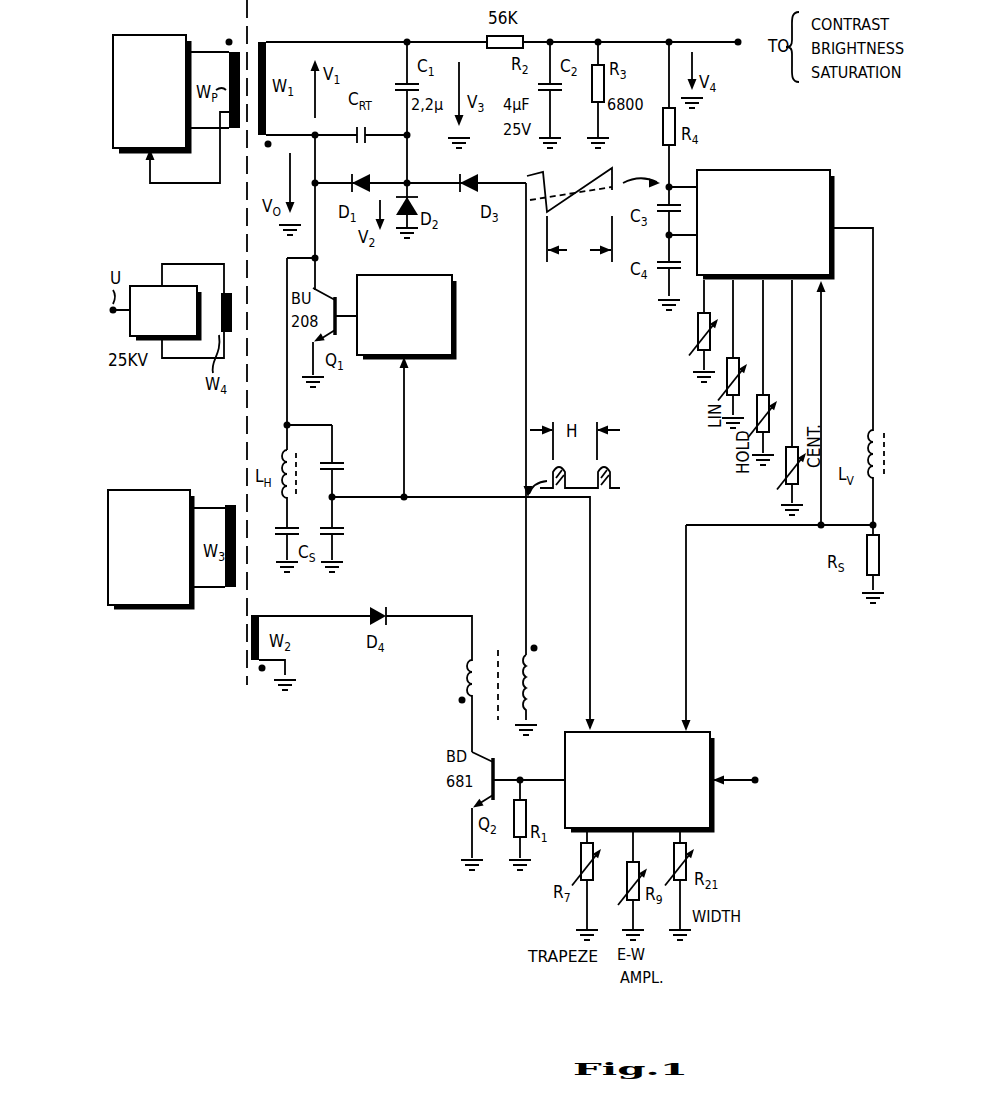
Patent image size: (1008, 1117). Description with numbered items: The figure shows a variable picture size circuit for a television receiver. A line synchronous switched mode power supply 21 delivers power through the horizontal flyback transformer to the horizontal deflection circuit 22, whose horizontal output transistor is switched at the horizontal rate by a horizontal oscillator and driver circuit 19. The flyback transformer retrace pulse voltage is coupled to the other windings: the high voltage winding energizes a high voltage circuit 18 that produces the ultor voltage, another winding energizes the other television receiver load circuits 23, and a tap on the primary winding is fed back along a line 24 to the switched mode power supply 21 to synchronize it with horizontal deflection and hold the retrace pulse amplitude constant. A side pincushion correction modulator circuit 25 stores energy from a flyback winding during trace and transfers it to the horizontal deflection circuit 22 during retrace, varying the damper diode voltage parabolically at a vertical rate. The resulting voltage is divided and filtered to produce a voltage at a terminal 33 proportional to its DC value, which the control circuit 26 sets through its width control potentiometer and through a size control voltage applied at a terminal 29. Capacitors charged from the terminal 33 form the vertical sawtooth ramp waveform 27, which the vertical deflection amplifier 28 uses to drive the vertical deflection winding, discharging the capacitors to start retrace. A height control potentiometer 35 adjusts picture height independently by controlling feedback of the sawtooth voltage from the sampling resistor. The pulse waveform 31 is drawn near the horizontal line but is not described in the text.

The high voltage circuit 18 is at (146, 285).
The horizontal oscillator and driver circuit 19 is at (453, 310).
The switched mode power supply 21 is at (159, 32).
The horizontal deflection circuit 22 is at (374, 435).
The other television receiver load circuits 23 is at (152, 490).
The feedback line 24 is at (188, 187).
The side pincushion correction modulator circuit 25 is at (571, 707).
The control circuit 26 is at (636, 730).
The vertical sawtooth ramp voltage waveform 27 is at (530, 172).
The vertical deflection amplifier 28 is at (795, 170).
The size control voltage terminal 29 is at (755, 778).
The horizontal pulse signal 31 is at (612, 472).
The terminal 33 is at (739, 49).
The height control potentiometer 35 is at (694, 327).